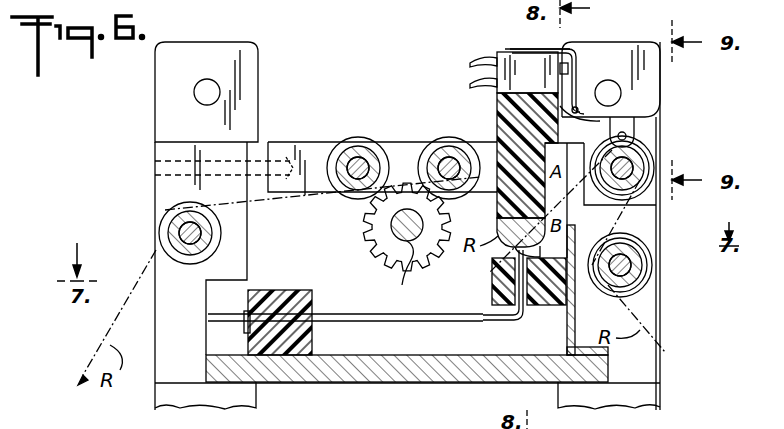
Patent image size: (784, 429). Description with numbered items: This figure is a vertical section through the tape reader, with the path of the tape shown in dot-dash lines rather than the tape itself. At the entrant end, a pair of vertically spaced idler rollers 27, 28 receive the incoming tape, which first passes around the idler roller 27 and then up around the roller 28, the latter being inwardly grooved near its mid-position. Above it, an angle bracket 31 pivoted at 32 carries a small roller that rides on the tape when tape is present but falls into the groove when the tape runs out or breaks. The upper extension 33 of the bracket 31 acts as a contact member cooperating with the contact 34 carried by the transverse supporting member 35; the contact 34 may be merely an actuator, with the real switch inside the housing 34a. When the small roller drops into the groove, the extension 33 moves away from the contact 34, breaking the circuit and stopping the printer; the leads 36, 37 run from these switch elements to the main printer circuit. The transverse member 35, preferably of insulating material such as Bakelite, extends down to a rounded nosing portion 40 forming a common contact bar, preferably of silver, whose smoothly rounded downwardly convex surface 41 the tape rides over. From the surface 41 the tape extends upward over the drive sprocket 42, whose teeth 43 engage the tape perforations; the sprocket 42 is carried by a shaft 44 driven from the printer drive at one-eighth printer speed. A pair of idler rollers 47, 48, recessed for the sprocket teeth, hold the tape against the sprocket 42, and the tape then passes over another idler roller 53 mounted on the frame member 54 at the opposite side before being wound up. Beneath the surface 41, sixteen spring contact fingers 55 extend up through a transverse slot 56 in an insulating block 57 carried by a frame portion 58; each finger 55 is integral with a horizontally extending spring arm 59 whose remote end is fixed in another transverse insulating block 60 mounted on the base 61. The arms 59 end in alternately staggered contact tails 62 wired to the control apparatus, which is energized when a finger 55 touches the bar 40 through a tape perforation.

The idler roller 27 is at (650, 264).
The idler roller 28 is at (652, 156).
The angle bracket 31 is at (611, 94).
The pivot 32 is at (600, 122).
The upper extension 33 is at (576, 94).
The contact 34 is at (561, 67).
The housing 34a is at (508, 72).
The transverse supporting member 35 is at (497, 107).
The lead 36 is at (480, 62).
The lead 37 is at (483, 84).
The rounded nosing portion 40 is at (500, 236).
The rounded surface 41 is at (527, 243).
The drive sprocket 42 is at (375, 247).
The teeth 43 is at (362, 215).
The shaft 44 is at (415, 263).
The idler roller 47 is at (440, 140).
The idler roller 48 is at (365, 112).
The idler roller 53 is at (196, 262).
The frame member 54 is at (163, 183).
The spring contact fingers 55 is at (492, 283).
The transverse slot 56 is at (508, 309).
The insulating block 57 is at (548, 306).
The frame portion 58 is at (578, 281).
The spring arm 59 is at (412, 321).
The transverse block 60 is at (312, 343).
The base 61 is at (340, 383).
The contact tails 62 is at (247, 311).